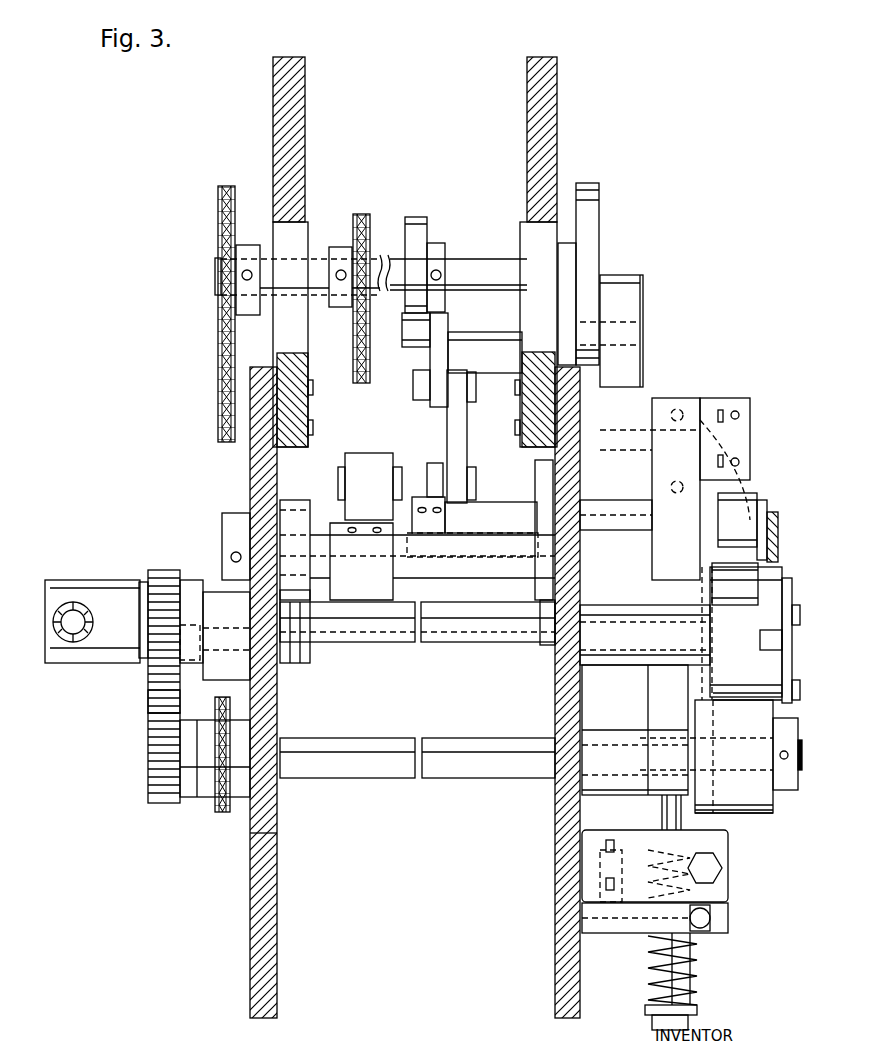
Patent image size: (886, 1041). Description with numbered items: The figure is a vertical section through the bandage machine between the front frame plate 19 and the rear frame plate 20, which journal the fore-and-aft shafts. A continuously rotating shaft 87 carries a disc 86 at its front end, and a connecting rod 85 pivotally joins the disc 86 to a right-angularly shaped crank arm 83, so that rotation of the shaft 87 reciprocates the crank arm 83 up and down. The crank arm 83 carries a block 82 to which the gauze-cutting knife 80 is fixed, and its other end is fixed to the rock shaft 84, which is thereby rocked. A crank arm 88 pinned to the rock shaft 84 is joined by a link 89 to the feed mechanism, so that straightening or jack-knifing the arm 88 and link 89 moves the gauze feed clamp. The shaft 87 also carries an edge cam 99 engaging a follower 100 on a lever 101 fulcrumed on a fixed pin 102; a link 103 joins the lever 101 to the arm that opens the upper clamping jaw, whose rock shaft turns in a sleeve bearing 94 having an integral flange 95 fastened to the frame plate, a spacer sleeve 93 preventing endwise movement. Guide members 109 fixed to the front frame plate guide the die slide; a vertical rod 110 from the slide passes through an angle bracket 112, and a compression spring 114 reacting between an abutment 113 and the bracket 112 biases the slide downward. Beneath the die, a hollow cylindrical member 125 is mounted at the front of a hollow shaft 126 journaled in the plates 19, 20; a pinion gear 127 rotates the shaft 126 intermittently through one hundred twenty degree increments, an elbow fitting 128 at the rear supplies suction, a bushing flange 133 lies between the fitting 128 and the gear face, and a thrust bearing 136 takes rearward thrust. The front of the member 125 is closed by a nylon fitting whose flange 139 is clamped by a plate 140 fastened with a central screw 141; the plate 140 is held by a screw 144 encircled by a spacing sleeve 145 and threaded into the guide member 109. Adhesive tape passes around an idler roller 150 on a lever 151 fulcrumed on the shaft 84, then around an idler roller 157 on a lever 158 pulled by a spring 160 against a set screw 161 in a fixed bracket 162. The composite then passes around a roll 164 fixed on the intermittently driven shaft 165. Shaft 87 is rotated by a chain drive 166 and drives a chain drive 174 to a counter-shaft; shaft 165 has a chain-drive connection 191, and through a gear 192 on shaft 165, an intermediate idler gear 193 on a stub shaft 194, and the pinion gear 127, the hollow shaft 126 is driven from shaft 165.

The front frame plate 19 is at (527, 92).
The rear frame plate 20 is at (305, 100).
The knife 80 is at (730, 470).
The block 82 is at (705, 398).
The crank arm 83 is at (650, 489).
The rock shaft 84 is at (428, 578).
The connecting rod 85 is at (643, 353).
The disc 86 is at (599, 196).
The continuously rotating shaft 87 is at (483, 258).
The crank arm 88 is at (350, 520).
The link 89 is at (358, 453).
The spacer sleeve 93 is at (620, 510).
The sleeve bearing 94 is at (505, 502).
The flange 95 is at (532, 462).
The edge cam 99 is at (418, 218).
The follower 100 is at (402, 345).
The lever 101 is at (430, 395).
The fixed pin 102 is at (485, 336).
The link 103 is at (467, 418).
The guide members 109 is at (650, 697).
The vertical rod 110 is at (697, 958).
The angle bracket 112 is at (645, 871).
The abutment 113 is at (645, 1010).
The compression spring 114 is at (650, 980).
The hollow cylindrical member 125 is at (710, 622).
The hollow shaft 126 is at (432, 642).
The pinion gear 127 is at (160, 570).
The elbow fitting 128 is at (78, 580).
The flange 133 is at (143, 582).
The thrust bearing 136 is at (305, 663).
The flange 139 is at (775, 620).
The plate 140 is at (790, 578).
The screw 141 is at (790, 637).
The screw 144 is at (745, 690).
The spacing sleeve 145 is at (735, 695).
The idler roller 150 is at (740, 505).
The lever 151 is at (785, 511).
The idler roller 157 is at (735, 584).
The lever 158 is at (705, 937).
The spring 160 is at (728, 927).
The set screw 161 is at (722, 868).
The fixed bracket 162 is at (728, 896).
The roll 164 is at (752, 812).
The shaft 165 is at (432, 738).
The chain drive 166 is at (218, 364).
The chain drive 174 is at (360, 216).
The chain-drive connection 191 is at (222, 813).
The gear 192 is at (148, 790).
The intermediate idler gear 193 is at (147, 702).
The stub shaft 194 is at (215, 630).